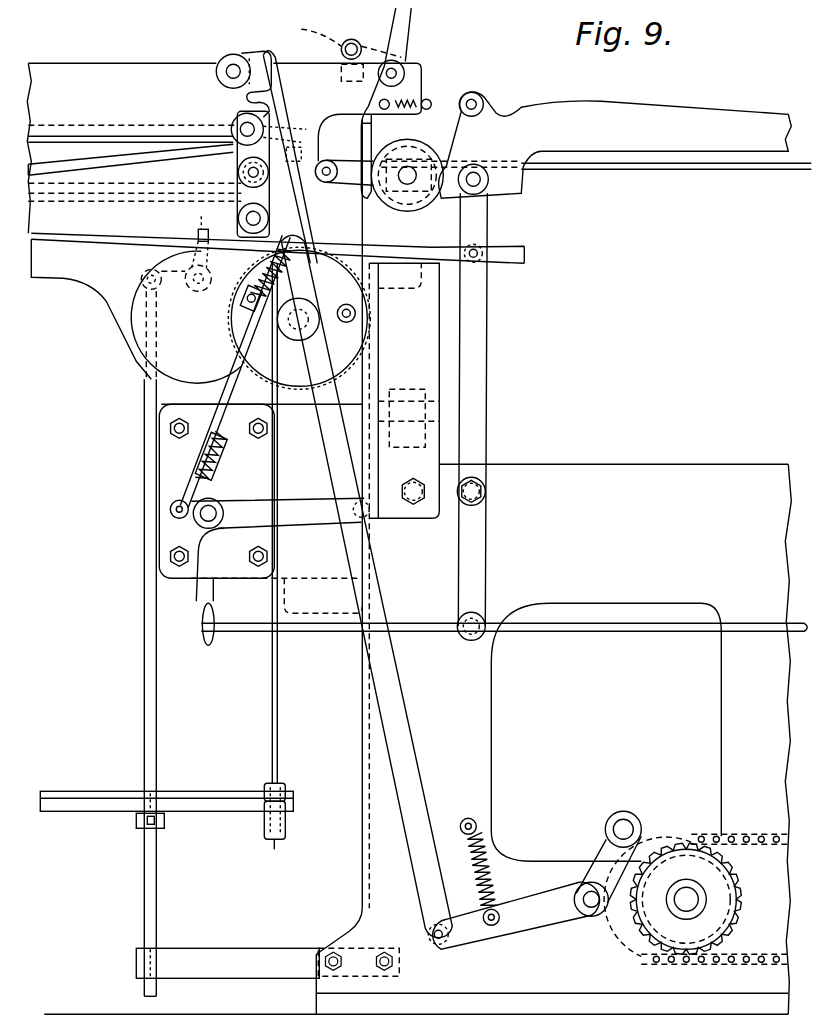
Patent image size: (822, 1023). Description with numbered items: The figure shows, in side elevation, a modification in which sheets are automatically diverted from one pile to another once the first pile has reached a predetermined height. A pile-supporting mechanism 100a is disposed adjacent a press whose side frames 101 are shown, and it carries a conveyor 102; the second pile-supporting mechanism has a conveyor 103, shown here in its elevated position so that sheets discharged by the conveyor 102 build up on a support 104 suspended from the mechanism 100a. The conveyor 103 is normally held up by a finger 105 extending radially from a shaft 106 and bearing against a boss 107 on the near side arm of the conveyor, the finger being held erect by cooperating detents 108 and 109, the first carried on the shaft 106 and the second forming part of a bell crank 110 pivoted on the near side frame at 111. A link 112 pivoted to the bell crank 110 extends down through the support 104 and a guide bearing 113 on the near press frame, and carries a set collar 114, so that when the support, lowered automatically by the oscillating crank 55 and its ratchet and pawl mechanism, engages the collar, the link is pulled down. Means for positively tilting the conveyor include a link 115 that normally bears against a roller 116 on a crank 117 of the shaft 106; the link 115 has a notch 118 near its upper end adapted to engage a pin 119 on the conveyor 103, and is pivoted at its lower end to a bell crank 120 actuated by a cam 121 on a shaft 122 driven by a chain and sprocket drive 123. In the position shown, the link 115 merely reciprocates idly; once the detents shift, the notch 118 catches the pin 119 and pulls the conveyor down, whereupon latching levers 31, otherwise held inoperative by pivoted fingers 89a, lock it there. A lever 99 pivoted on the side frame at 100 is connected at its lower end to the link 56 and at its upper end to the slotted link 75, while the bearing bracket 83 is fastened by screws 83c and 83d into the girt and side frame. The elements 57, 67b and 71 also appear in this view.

The latching levers 31 is at (405, 37).
The oscillating crank 55 is at (327, 290).
The link 56 is at (597, 625).
The link 57 is at (320, 512).
The connecting rod with turnbuckle 67b is at (217, 392).
The tapered plate 71 is at (42, 163).
The link 75 is at (75, 233).
The bearing bracket 83 is at (458, 324).
The screw 83c is at (410, 392).
The screw 83d is at (412, 507).
The pivoted fingers 89a is at (352, 40).
The lever 99 is at (477, 397).
The pivot 100 is at (482, 492).
The pile-supporting mechanism 100a is at (107, 300).
The side frames 101 is at (620, 472).
The conveyor 102 is at (692, 113).
The conveyor 103 is at (88, 68).
The support 104 is at (80, 790).
The finger 105 is at (235, 166).
The shaft 106 is at (237, 215).
The boss 107 is at (230, 143).
The detent 108 is at (200, 222).
The detent 109 is at (232, 252).
The bell crank 110 is at (173, 290).
The pivot 111 is at (195, 292).
The link 112 is at (147, 426).
The guide bearing 113 is at (247, 967).
The set collar 114 is at (135, 820).
The link 115 is at (397, 685).
The roller 116 is at (134, 178).
The crank 117 is at (297, 172).
The notch 118 is at (250, 100).
The pin 119 is at (227, 63).
The bell crank 120 is at (540, 923).
The cam 121 is at (667, 827).
The shaft 122 is at (683, 910).
The chain and sprocket drive 123 is at (752, 832).